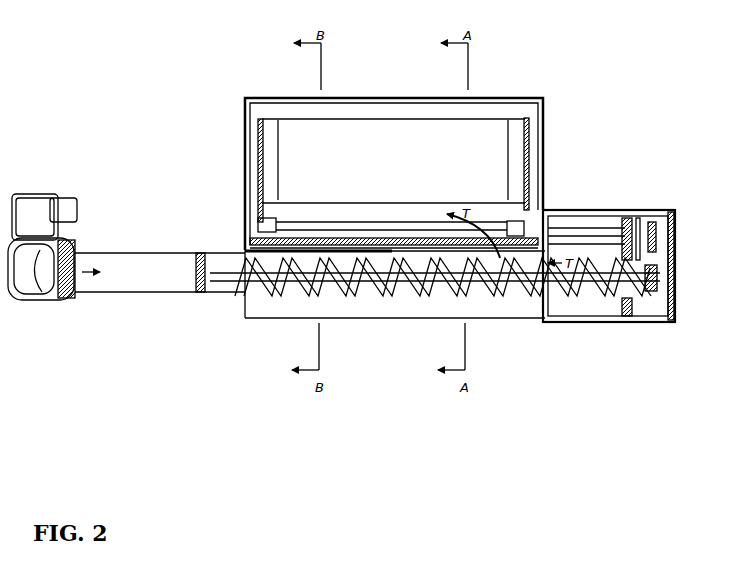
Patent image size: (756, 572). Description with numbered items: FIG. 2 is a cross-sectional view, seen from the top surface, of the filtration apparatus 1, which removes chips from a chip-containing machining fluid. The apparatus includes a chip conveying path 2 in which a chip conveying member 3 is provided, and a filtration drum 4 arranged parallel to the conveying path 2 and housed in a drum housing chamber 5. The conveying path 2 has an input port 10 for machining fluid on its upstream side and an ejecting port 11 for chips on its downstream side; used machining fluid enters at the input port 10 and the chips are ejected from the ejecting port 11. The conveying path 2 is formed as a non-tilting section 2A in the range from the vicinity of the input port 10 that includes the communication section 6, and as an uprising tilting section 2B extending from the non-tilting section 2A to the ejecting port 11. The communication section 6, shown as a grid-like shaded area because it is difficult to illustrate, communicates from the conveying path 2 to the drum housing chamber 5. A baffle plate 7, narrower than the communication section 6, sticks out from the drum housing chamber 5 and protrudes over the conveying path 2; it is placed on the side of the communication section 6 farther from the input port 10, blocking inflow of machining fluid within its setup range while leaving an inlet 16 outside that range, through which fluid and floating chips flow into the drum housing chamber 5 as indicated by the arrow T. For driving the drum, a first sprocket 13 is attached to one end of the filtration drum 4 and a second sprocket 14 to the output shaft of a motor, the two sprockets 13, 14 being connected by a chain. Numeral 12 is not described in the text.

The filtration apparatus 1 is at (682, 120).
The chip conveying path 2 is at (186, 348).
The non-tilting section 2A is at (283, 302).
The uprising tilting section 2B is at (184, 292).
The chip conveying member 3 is at (435, 303).
The filtration drum 4 is at (404, 118).
The drum housing chamber 5 is at (483, 110).
The communication section 6 is at (399, 240).
The baffle plate 7 is at (331, 270).
The input port 10 is at (579, 250).
The ejecting port 11 is at (52, 292).
The gear box 12 is at (44, 211).
The first sprocket 13 is at (257, 150).
The second sprocket 14 is at (258, 224).
The inlet 16 is at (449, 254).